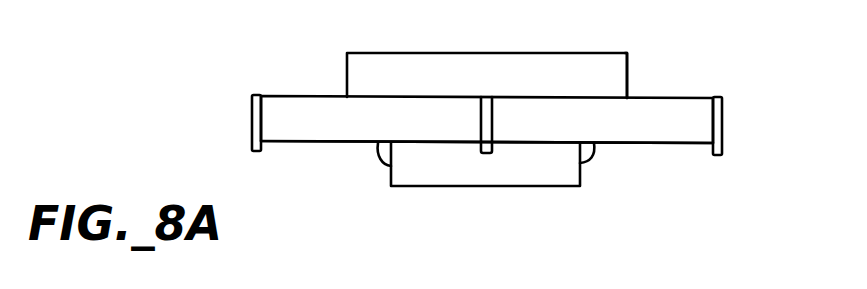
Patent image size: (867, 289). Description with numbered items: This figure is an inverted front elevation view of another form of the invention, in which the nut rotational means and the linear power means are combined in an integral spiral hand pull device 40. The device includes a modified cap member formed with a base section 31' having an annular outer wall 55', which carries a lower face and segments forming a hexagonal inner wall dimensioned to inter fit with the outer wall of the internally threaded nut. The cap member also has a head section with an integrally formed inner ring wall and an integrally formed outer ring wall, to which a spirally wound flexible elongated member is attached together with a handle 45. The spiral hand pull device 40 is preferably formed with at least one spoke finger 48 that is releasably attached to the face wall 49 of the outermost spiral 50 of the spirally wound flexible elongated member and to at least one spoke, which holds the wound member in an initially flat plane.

The spiral hand pull device 40 is at (316, 57).
The face wall 49 is at (321, 118).
The outermost spiral 50 is at (651, 134).
The annular outer wall 55' is at (487, 62).
The base section 31' is at (672, 70).
The spoke finger 48 is at (250, 120).
The handle 45 is at (375, 164).